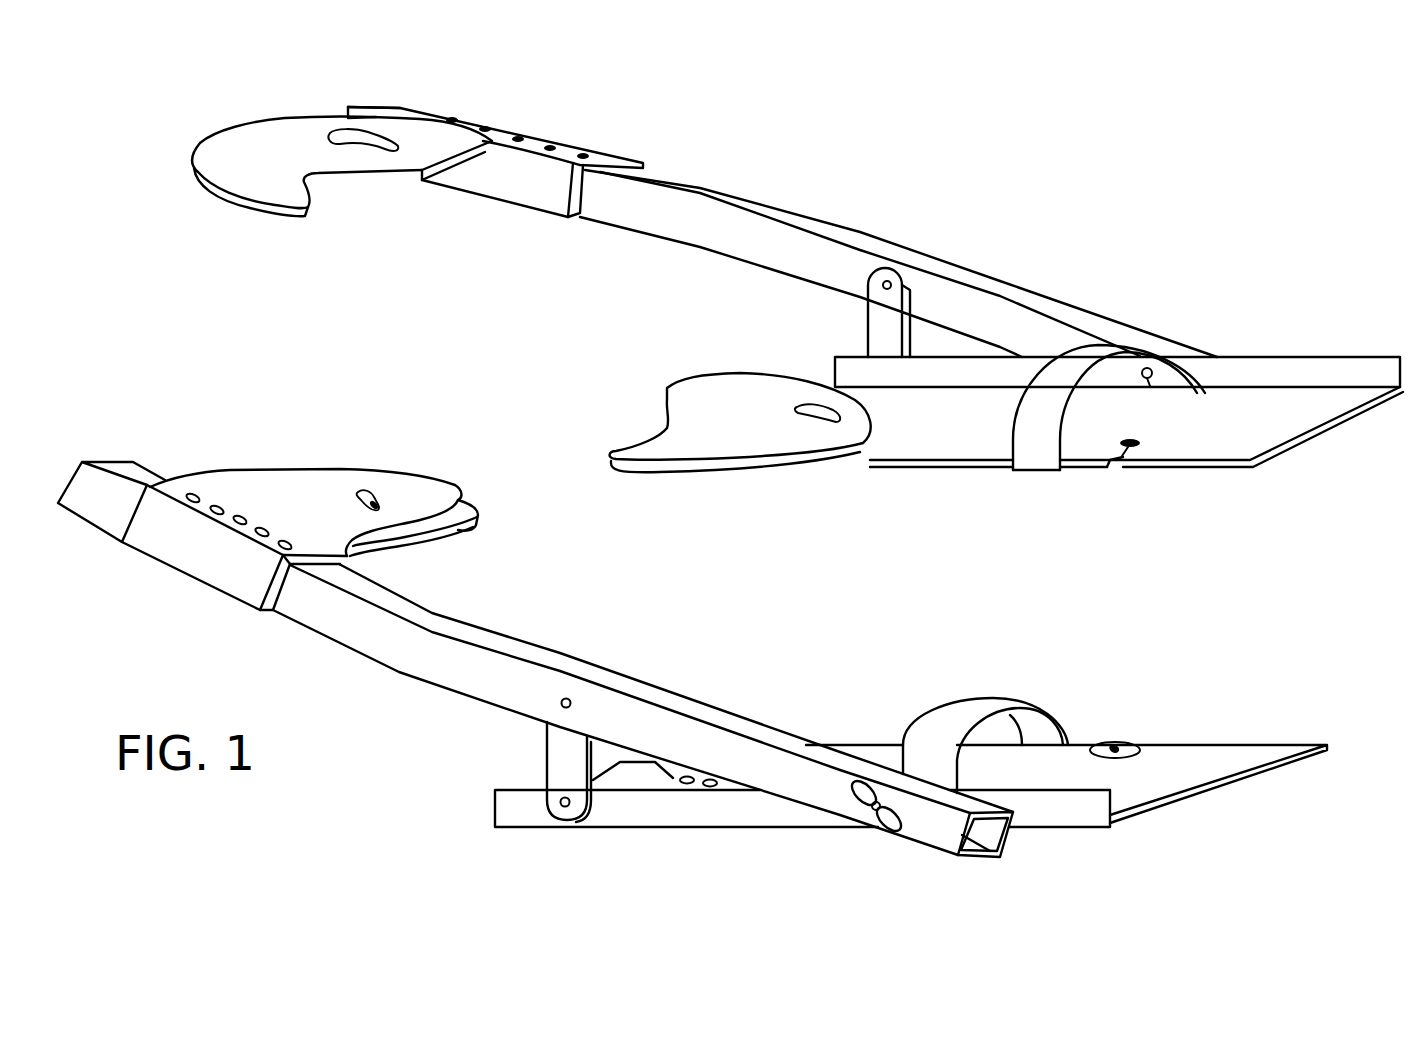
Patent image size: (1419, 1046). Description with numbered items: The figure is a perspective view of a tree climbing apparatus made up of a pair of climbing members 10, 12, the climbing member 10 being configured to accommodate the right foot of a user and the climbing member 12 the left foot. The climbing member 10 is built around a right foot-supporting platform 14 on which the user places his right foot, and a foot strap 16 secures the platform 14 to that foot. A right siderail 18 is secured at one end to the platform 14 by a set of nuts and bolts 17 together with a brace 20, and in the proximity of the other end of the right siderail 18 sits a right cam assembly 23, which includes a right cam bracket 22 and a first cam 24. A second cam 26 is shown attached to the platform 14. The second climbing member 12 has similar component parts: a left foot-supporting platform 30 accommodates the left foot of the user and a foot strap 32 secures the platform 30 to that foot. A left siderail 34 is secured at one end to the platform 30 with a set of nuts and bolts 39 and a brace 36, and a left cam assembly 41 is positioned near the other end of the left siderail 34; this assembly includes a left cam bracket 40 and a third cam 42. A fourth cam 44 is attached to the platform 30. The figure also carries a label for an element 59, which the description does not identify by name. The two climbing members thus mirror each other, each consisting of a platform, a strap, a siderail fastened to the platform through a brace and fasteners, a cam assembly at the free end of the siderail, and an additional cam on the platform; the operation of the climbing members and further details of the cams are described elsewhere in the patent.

The climbing member 10 is at (915, 133).
The climbing member 12 is at (700, 550).
The right foot-supporting platform 14 is at (1180, 440).
The foot strap 16 is at (1037, 437).
The nuts and bolts 17 is at (897, 283).
The right siderail 18 is at (1005, 287).
The brace 20 is at (885, 317).
The right cam bracket 22 is at (533, 138).
The right cam assembly 23 is at (437, 106).
The first cam 24 is at (243, 153).
The second cam 26 is at (702, 393).
The left foot-supporting platform 30 is at (1220, 757).
The foot strap 32 is at (960, 712).
The left siderail 34 is at (517, 657).
The brace 36 is at (560, 770).
The nuts and bolts 39 is at (563, 806).
The left cam bracket 40 is at (277, 487).
The left cam assembly 41 is at (432, 467).
The third cam 42 is at (460, 510).
The fourth cam 44 is at (623, 772).
The hole 59 is at (567, 690).